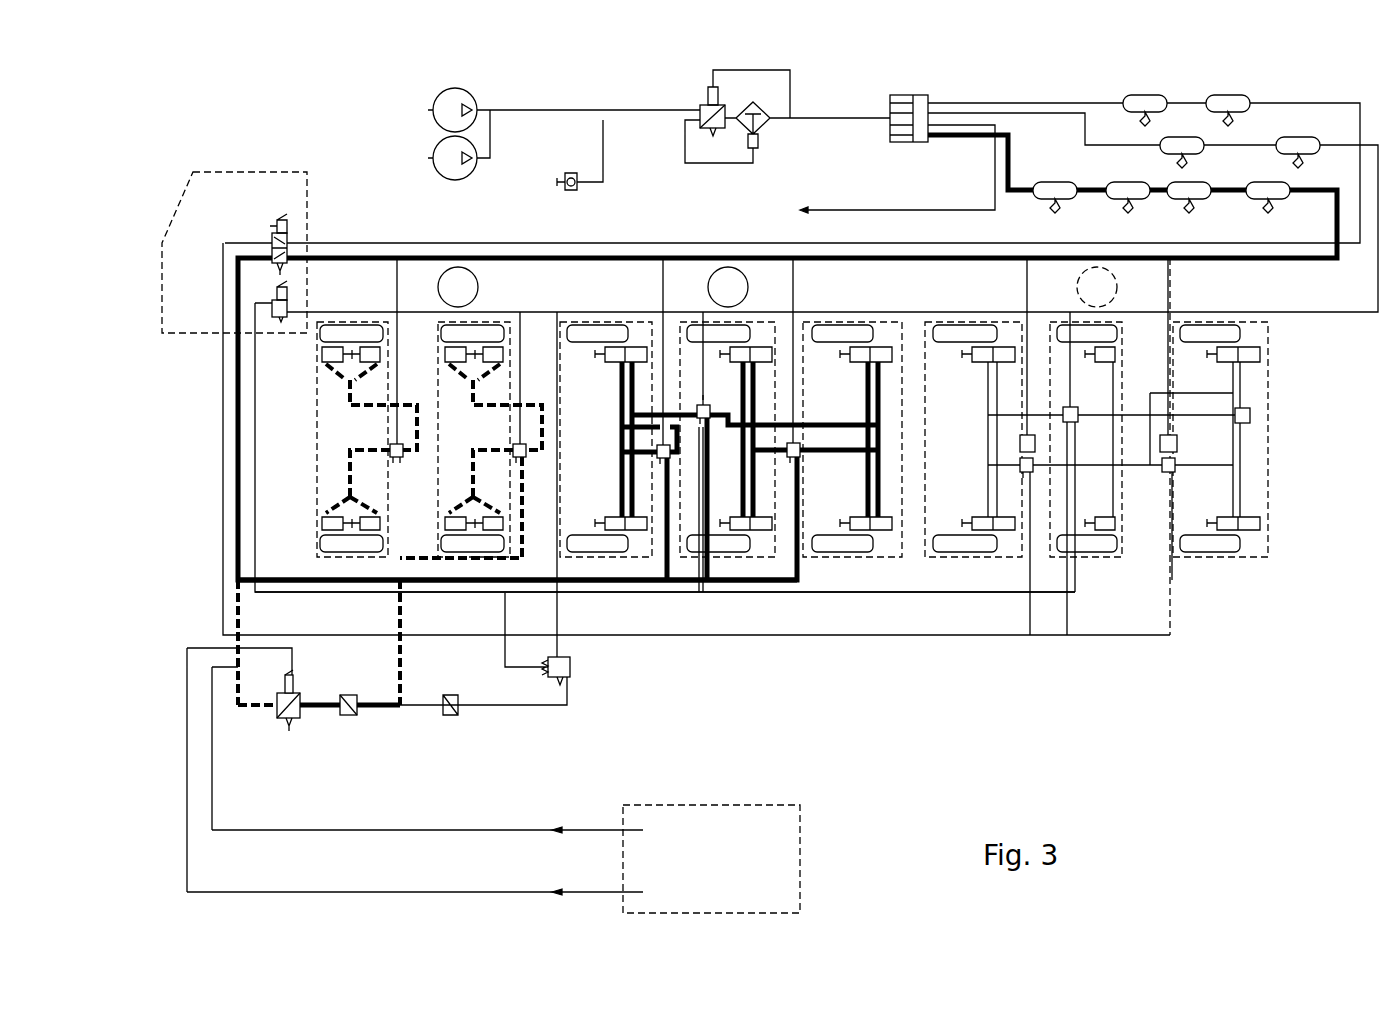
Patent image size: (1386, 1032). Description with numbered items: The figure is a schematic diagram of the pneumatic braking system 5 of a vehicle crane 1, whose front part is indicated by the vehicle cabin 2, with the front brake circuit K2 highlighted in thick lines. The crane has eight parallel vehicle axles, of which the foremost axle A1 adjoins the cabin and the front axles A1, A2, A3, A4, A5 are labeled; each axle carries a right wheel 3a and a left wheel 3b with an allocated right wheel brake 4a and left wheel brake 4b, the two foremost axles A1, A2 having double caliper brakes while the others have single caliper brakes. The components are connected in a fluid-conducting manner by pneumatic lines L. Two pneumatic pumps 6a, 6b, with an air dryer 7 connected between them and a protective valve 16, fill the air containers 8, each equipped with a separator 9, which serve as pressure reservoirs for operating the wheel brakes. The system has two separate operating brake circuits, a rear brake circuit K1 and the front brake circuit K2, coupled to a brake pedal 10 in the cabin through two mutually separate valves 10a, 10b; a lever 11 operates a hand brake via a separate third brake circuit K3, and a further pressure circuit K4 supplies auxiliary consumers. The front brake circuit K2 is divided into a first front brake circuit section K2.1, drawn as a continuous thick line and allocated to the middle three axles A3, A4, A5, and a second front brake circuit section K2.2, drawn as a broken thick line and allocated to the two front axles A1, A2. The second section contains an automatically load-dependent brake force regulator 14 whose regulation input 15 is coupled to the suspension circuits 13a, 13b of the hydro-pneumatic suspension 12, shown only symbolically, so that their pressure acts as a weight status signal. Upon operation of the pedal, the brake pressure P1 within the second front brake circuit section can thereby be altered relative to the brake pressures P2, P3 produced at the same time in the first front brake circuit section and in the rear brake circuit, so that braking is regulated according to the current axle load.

The vehicle crane 1 is at (295, 118).
The vehicle cabin 2 is at (234, 252).
The right wheel 3a is at (350, 327).
The left wheel 3b is at (318, 553).
The right wheel brake 4a is at (323, 362).
The left wheel brake 4b is at (323, 498).
The pneumatic braking system 5 is at (947, 672).
The pneumatic pump 6a is at (437, 96).
The pneumatic pump 6b is at (437, 145).
The air dryer 7 is at (773, 121).
The air container 8 is at (1147, 94).
The separator 9 is at (1269, 213).
The brake pedal 10 is at (288, 232).
The valve of the brake pedal 10a is at (265, 231).
The valve of the brake pedal 10b is at (293, 272).
The lever 11 is at (272, 294).
The hydro-pneumatic suspension 12 is at (711, 859).
The suspension circuit 13a is at (460, 833).
The suspension circuit 13b is at (447, 895).
The automatically load-dependent brake force regulator 14 is at (300, 712).
The regulation input 15 is at (292, 680).
The protective valve 16 is at (903, 117).
The rear brake circuit K1 is at (960, 102).
The front brake circuit K2 is at (972, 142).
The third brake circuit K3 is at (1022, 112).
The pressure circuit K4 is at (940, 142).
The first front brake circuit section K2.1 is at (630, 583).
The second front brake circuit section K2.2 is at (400, 660).
The pneumatic line L is at (828, 110).
The brake pressure P1 is at (458, 287).
The brake pressure P2 is at (728, 287).
The brake pressure P3 is at (1097, 287).
The vehicle axle A1 is at (294, 390).
The vehicle axle A2 is at (471, 440).
The vehicle axle A3 is at (628, 451).
The vehicle axle A4 is at (779, 457).
The vehicle axle A5 is at (844, 439).